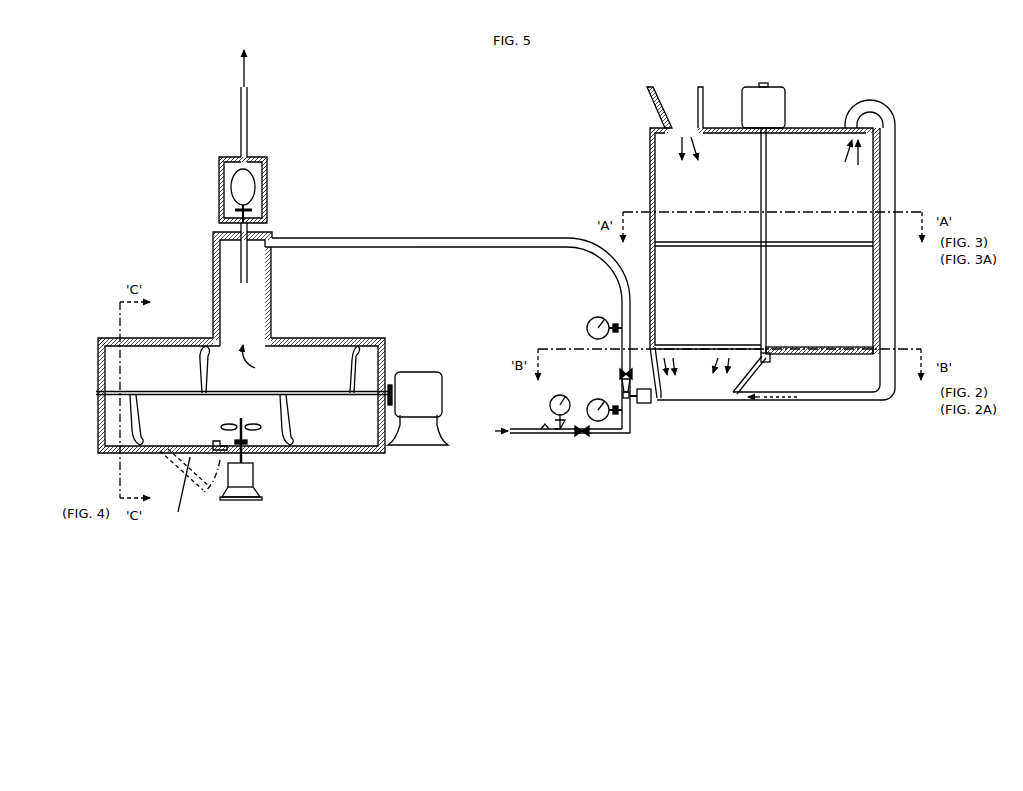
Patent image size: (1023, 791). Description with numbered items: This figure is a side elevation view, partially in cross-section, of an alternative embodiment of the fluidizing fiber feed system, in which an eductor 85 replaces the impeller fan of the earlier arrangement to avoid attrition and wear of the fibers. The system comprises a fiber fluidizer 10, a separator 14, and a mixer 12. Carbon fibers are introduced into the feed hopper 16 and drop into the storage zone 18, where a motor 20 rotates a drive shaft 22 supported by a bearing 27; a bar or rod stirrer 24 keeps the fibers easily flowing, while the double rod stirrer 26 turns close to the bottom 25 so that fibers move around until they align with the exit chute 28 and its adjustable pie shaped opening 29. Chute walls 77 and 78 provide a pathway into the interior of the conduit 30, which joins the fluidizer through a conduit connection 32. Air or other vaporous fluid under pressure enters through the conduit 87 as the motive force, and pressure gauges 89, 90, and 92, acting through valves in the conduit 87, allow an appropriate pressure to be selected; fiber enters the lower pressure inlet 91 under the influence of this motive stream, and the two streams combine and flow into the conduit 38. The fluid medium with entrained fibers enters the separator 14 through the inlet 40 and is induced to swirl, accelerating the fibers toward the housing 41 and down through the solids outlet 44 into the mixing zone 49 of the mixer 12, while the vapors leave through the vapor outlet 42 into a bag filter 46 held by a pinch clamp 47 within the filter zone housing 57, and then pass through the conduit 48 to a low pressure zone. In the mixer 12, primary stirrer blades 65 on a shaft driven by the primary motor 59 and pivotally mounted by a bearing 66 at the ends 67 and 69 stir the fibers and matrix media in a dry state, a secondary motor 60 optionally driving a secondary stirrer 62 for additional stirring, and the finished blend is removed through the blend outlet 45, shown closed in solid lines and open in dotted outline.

The fiber fluidizer 10 is at (645, 180).
The mixer 12 is at (335, 338).
The separator 14 is at (213, 290).
The feed hopper 16 is at (672, 123).
The storage zone 18 is at (836, 160).
The motor 20 is at (763, 105).
The drive shaft 22 is at (752, 178).
The bar or rod stirrer 24 is at (812, 247).
The bottom 25 is at (812, 355).
The double rod stirrer 26 is at (808, 347).
The bearing 27 is at (770, 362).
The exit chute 28 is at (695, 372).
The pie shaped opening 29 is at (735, 355).
The conduit 30 is at (812, 405).
The conduit connection 32 is at (848, 118).
The conduit 38 is at (548, 249).
The inlet 40 is at (400, 231).
The housing 41 is at (272, 313).
The vapor outlet 42 is at (247, 284).
The solids outlet 44 is at (261, 362).
The blend outlet 45 is at (193, 480).
The bag filter 46 is at (219, 188).
The pinch clamp 47 is at (270, 200).
The conduit 48 is at (272, 120).
The mixing zone 49 is at (241, 421).
The filter zone housing 57 is at (270, 172).
The primary motor 59 is at (425, 372).
The secondary motor 60 is at (254, 474).
The secondary stirrer 62 is at (243, 420).
The primary stirrer blades 65 is at (245, 395).
The bearing 66 is at (97, 392).
The end 67 is at (97, 418).
The end 69 is at (386, 455).
The chute wall 77 is at (725, 396).
The chute wall 78 is at (660, 345).
The eductor 85 is at (620, 385).
The conduit 87 is at (528, 435).
The pressure gauge 89 is at (548, 404).
The pressure gauge 90 is at (598, 398).
The lower pressure inlet 91 is at (643, 404).
The pressure gauge 92 is at (603, 318).